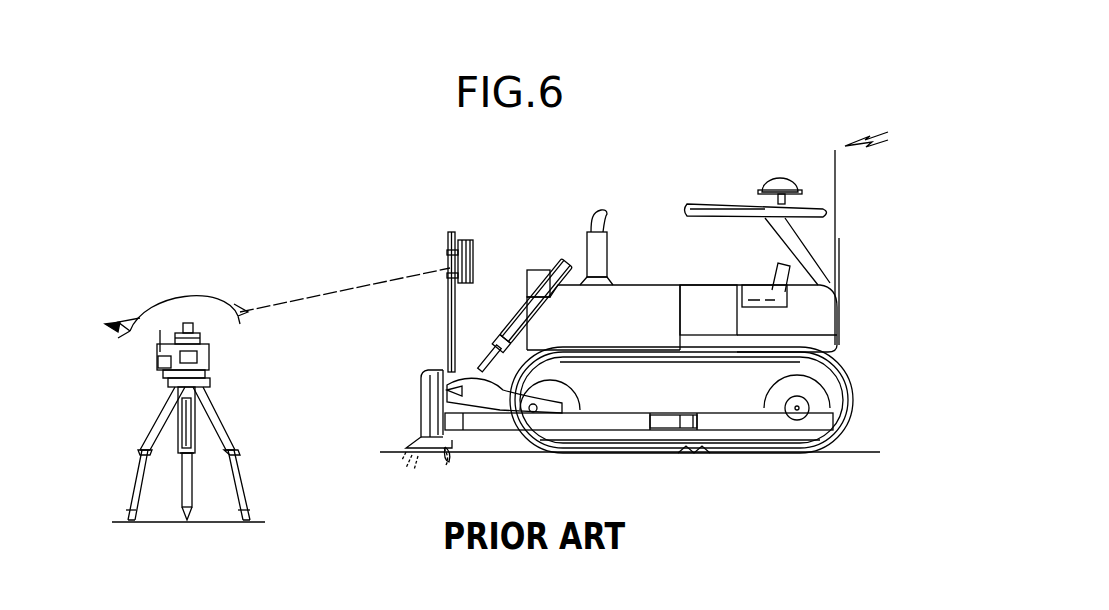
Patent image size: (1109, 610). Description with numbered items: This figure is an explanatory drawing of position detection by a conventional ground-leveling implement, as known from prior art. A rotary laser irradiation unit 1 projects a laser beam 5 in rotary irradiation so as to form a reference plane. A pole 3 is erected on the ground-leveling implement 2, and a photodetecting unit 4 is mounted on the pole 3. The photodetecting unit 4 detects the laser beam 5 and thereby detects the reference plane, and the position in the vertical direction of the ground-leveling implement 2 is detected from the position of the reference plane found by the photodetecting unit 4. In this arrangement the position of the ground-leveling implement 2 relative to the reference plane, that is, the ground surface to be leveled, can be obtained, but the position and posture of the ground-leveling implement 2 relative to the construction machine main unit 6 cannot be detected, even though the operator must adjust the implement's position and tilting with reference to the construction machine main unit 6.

The rotary laser irradiation unit 1 is at (250, 413).
The ground-leveling implement 2 is at (440, 368).
The pole 3 is at (447, 307).
The photodetecting unit 4 is at (473, 262).
The laser beam 5 is at (396, 278).
The construction machine main unit 6 is at (665, 247).